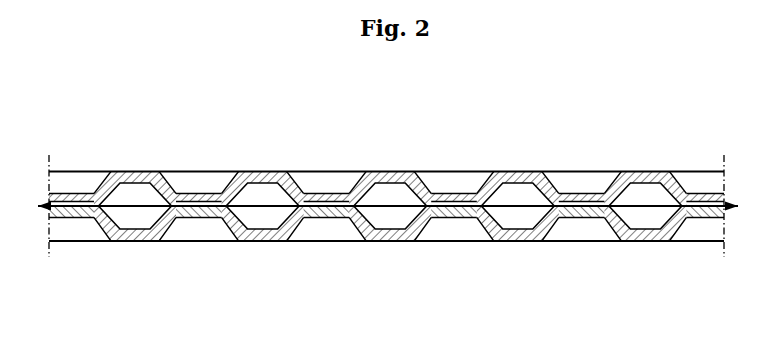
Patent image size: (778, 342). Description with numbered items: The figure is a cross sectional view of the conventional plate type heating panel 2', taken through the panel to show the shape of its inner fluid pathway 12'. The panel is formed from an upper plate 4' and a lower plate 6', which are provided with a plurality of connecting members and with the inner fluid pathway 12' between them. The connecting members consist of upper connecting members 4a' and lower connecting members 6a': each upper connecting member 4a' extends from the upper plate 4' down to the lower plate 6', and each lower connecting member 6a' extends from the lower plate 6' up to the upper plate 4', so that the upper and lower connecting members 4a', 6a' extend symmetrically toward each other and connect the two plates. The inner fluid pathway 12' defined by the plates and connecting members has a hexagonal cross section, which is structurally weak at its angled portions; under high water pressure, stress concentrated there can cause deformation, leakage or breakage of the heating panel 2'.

The conventional heating panel 2' is at (388, 155).
The upper plate 4' is at (390, 163).
The upper connecting members 4a' is at (386, 145).
The lower plate 6' is at (386, 285).
The lower connecting members 6a' is at (386, 268).
The inner fluid pathway 12' is at (390, 255).